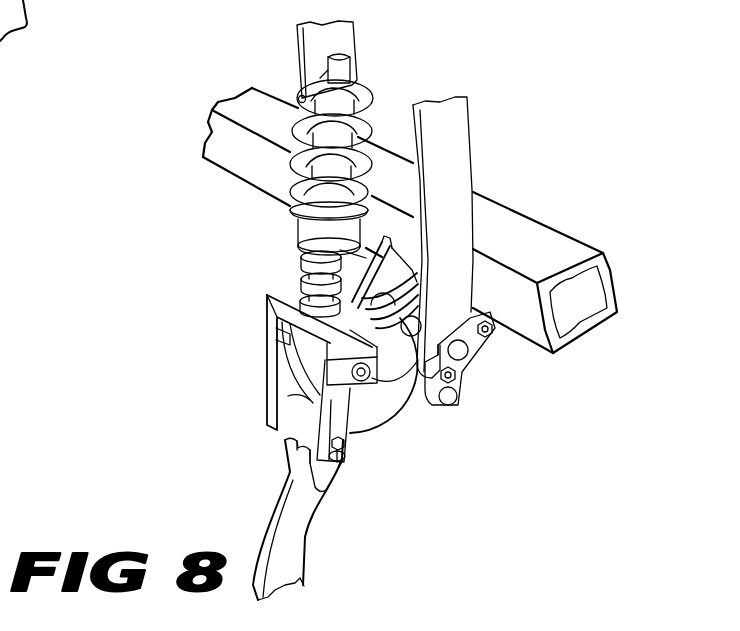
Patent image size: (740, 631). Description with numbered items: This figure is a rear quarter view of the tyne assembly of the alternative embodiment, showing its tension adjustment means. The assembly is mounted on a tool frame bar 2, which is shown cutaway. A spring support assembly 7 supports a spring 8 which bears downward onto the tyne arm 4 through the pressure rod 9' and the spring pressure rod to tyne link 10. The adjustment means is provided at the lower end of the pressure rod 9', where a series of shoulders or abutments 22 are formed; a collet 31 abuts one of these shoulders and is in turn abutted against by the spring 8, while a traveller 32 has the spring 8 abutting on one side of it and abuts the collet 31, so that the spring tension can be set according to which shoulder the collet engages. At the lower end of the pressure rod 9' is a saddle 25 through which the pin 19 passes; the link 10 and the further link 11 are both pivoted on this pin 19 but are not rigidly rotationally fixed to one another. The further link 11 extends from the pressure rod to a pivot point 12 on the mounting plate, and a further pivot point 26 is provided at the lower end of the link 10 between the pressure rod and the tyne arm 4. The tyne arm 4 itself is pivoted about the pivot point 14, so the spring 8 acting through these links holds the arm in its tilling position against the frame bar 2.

The tool frame bar 2 is at (498, 235).
The spring support assembly 7 is at (448, 155).
The spring 8 is at (300, 194).
The traveller 32 is at (304, 231).
The collet 31 is at (298, 247).
The pressure rod 9' is at (280, 284).
The shoulders or abutments 22 is at (300, 285).
The saddle 25 is at (275, 302).
The link 11 is at (298, 362).
The spring pressure rod to tyne link 10 is at (288, 388).
The pin 19 is at (360, 384).
The tyne arm 4 is at (296, 514).
The pivot point 26 is at (341, 463).
The pivot point 14 is at (462, 348).
The pivot point 12 is at (453, 403).